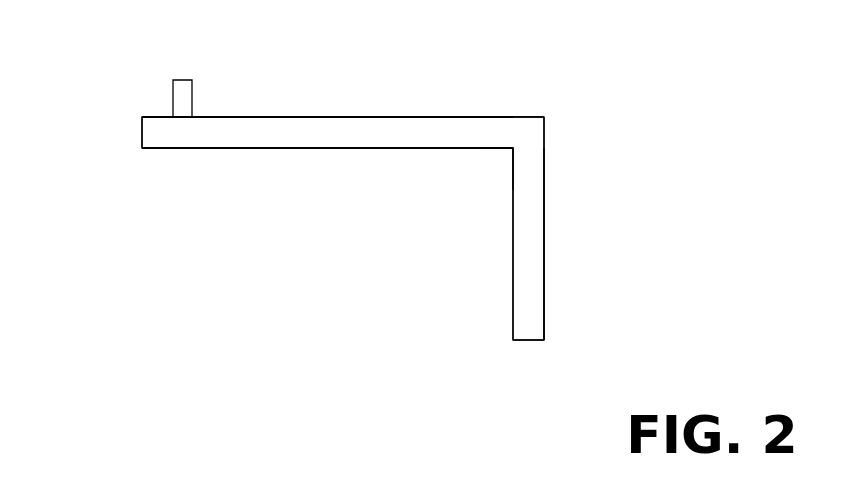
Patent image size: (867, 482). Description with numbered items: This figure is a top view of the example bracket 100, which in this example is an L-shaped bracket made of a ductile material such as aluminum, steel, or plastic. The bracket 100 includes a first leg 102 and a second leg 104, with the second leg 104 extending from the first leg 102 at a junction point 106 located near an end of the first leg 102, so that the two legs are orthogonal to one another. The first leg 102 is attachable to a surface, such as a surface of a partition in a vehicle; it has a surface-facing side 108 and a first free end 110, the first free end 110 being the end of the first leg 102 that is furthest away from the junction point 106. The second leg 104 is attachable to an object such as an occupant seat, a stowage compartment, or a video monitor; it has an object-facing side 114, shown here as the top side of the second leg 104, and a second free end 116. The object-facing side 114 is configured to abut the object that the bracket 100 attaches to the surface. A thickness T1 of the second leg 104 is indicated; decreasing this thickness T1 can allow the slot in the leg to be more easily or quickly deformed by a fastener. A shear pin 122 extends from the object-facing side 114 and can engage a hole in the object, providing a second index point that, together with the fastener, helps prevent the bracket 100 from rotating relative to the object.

The bracket 100 is at (96, 69).
The first leg 102 is at (544, 187).
The second leg 104 is at (173, 148).
The junction point 106 is at (492, 169).
The surface-facing side 108 is at (564, 295).
The first free end 110 is at (528, 351).
The object-facing side 114 is at (485, 106).
The second free end 116 is at (130, 149).
The shear pin 122 is at (183, 80).
The thickness T1 is at (355, 175).